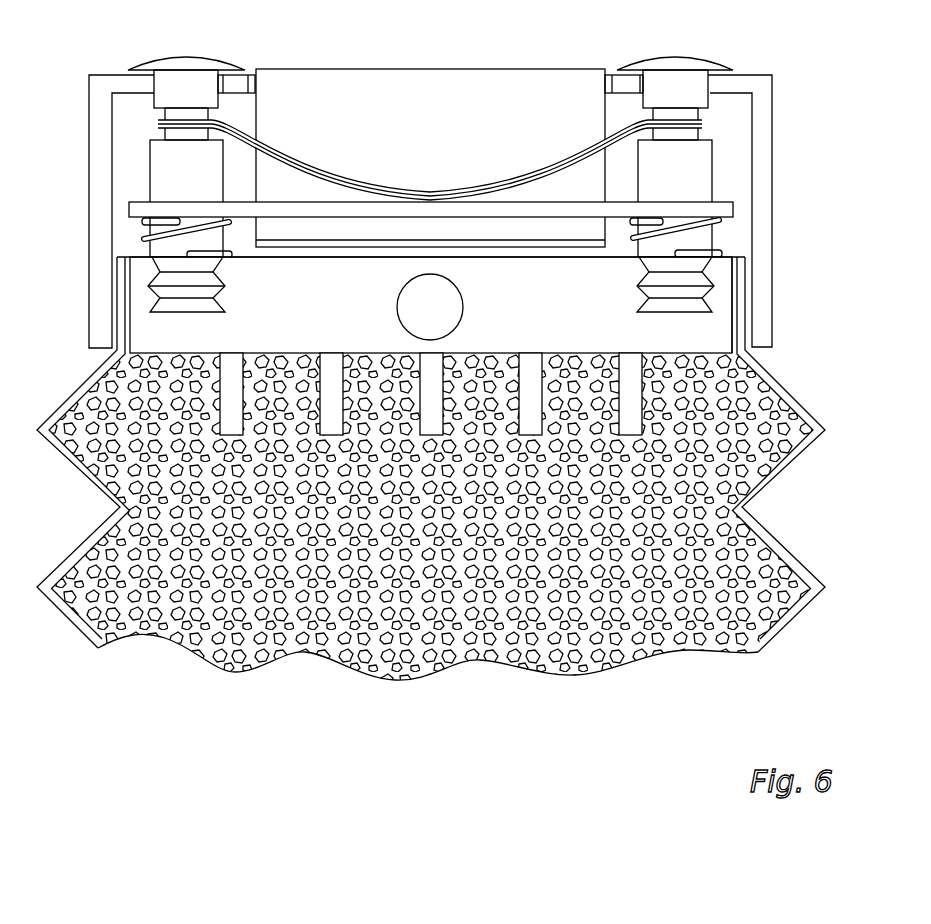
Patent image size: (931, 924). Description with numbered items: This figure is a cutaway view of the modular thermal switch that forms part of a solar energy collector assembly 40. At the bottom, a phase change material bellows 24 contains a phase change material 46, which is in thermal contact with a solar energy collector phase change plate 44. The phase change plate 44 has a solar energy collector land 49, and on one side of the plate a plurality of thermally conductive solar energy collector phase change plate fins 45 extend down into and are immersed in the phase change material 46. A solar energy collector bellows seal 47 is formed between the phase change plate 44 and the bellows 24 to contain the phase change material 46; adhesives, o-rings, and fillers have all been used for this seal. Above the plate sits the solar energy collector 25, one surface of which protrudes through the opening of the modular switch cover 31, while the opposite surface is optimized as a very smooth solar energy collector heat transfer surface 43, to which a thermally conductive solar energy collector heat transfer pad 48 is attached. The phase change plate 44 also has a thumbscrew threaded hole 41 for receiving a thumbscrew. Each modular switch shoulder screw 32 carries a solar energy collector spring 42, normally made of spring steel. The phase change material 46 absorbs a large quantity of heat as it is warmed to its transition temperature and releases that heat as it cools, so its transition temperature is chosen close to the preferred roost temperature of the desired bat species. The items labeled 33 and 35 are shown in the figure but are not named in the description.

The phase change material bellows 24 is at (800, 565).
The solar energy collector 25 is at (485, 73).
The modular switch cover 31 is at (105, 73).
The modular switch shoulder screw 32 is at (208, 57).
The nut 33 is at (700, 113).
The flexible blade 35 is at (556, 160).
The solar energy collector assembly 40 is at (885, 476).
The thumbscrew threaded hole 41 is at (401, 303).
The solar energy collector spring 42 is at (722, 222).
The solar energy collector heat transfer surface 43 is at (527, 247).
The solar energy collector phase change plate 44 is at (720, 333).
The solar energy collector phase change plate fins 45 is at (630, 402).
The phase change material 46 is at (745, 488).
The solar energy collector bellows seal 47 is at (735, 288).
The solar energy collector heat transfer pad 48 is at (299, 247).
The solar energy collector land 49 is at (728, 200).